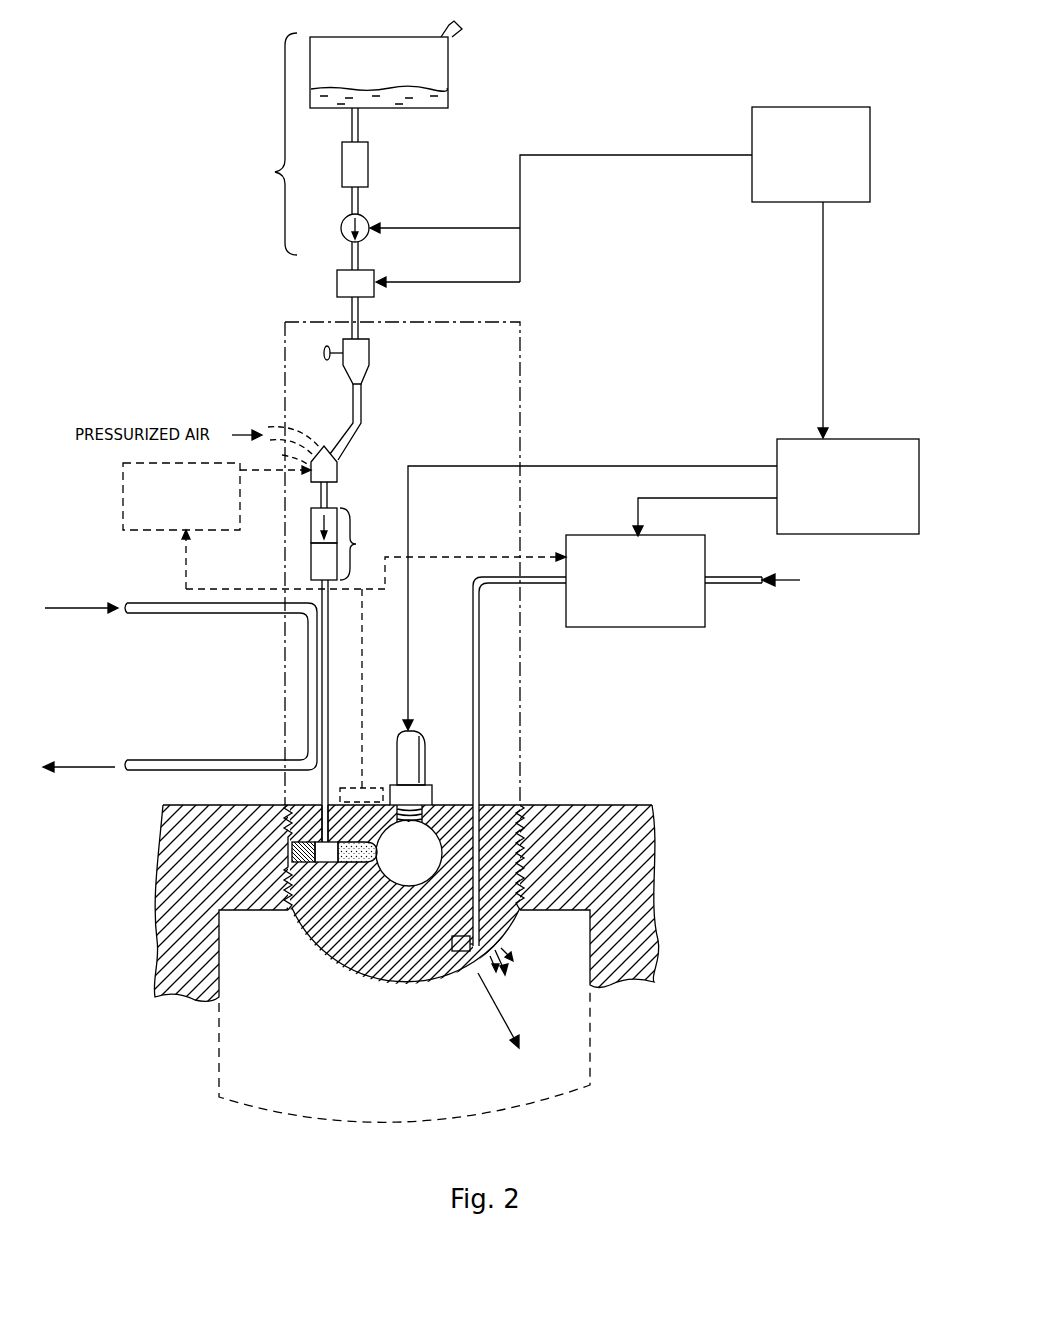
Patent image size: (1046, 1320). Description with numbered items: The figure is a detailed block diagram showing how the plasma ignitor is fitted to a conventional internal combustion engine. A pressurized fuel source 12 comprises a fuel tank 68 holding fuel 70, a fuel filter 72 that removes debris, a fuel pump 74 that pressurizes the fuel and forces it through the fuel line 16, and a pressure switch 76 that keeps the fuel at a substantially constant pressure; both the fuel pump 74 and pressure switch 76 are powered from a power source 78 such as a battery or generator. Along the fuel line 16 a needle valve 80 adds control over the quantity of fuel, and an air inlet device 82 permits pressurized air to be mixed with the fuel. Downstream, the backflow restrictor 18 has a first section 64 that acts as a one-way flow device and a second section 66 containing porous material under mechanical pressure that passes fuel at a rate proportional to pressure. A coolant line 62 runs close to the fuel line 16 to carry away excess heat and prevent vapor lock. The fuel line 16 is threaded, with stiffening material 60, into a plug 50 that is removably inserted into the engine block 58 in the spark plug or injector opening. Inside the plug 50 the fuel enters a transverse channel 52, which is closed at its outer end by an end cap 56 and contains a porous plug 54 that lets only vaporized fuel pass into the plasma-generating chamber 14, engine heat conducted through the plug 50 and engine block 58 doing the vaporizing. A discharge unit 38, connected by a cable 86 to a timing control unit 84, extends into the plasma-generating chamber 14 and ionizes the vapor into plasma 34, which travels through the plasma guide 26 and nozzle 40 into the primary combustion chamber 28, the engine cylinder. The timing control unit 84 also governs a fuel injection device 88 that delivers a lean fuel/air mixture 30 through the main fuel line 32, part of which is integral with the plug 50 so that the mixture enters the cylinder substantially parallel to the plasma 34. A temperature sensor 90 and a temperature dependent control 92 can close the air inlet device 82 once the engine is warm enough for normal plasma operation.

The pressurized fuel source 12 is at (272, 172).
The plasma-generating chamber 14 is at (422, 848).
The fuel line 16 is at (360, 256).
The backflow restrictor 18 is at (358, 544).
The plasma guide 26 is at (457, 900).
The primary combustion chamber 28 is at (575, 1022).
The lean fuel/air mixture 30 is at (793, 582).
The main fuel line 32 is at (480, 752).
The plasma 34 is at (506, 1020).
The discharge unit 38 is at (420, 740).
The nozzle 40 is at (460, 962).
The plug 50 is at (357, 960).
The transverse channel 52 is at (330, 860).
The porous plug 54 is at (350, 862).
The end cap 56 is at (290, 912).
The engine block 58 is at (193, 812).
The stiffening material 60 is at (318, 803).
The coolant line 62 is at (267, 618).
The first section 64 is at (310, 522).
The second section 66 is at (310, 570).
The fuel tank 68 is at (450, 88).
The fuel 70 is at (398, 100).
The fuel filter 72 is at (368, 168).
The fuel pump 74 is at (372, 222).
The pressure switch 76 is at (336, 287).
The power source 78 is at (873, 137).
The needle valve 80 is at (370, 352).
The air inlet device 82 is at (340, 470).
The timing control unit 84 is at (866, 438).
The cable 86 is at (606, 466).
The fuel injection device 88 is at (662, 628).
The temperature sensor 90 is at (368, 787).
The temperature dependent control 92 is at (122, 505).